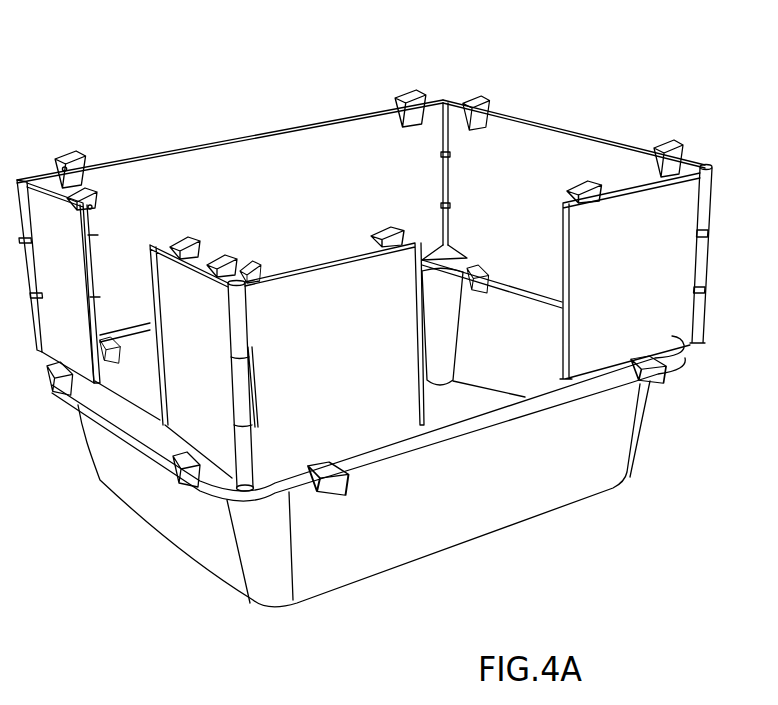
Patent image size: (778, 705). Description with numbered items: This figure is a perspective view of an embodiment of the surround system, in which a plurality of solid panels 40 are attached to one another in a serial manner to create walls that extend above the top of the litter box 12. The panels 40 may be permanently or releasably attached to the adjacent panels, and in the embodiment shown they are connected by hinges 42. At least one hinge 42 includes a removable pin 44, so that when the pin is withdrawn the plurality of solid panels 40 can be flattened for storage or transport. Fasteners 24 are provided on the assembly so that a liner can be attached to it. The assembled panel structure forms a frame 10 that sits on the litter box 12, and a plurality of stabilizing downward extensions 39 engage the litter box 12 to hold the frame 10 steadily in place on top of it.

The frame 10 is at (386, 304).
The litter box 12 is at (401, 433).
The fasteners 24 is at (417, 90).
The stabilizing downward extensions 39 is at (173, 477).
The solid panels 40 is at (233, 173).
The hinges 42 is at (446, 100).
The removable pin 44 is at (704, 163).